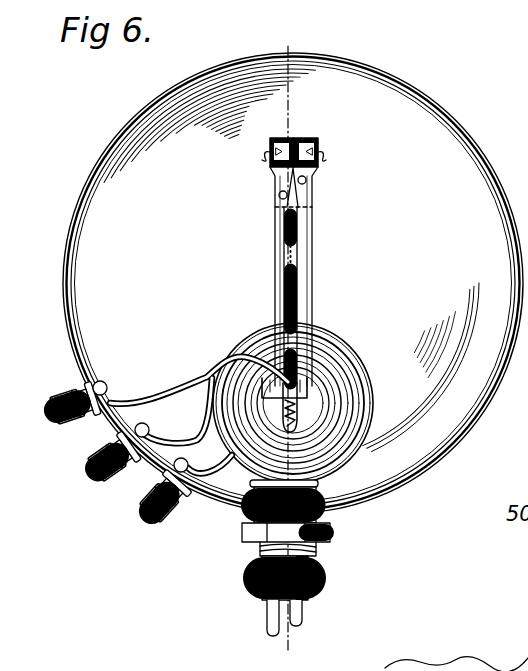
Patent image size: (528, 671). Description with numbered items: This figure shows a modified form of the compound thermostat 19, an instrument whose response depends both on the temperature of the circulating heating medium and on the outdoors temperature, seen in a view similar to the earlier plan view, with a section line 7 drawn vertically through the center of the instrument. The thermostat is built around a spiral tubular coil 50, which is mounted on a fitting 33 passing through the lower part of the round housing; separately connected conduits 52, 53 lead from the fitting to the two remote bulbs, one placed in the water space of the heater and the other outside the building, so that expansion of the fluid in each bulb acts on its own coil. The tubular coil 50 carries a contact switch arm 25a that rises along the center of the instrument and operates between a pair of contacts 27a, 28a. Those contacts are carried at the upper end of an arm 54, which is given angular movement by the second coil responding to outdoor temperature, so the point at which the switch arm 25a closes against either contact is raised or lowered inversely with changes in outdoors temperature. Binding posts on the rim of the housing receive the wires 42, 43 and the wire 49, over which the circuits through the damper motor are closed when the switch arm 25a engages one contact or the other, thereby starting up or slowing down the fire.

The section line 7 is at (310, 42).
The thermostat 19 is at (228, 321).
The contact switch arm 25a is at (290, 269).
The contact 27a is at (262, 160).
The contact 28a is at (326, 160).
The arm 54 is at (310, 256).
The tubular coil 50 is at (346, 346).
The wire 49 is at (86, 426).
The wire 42 is at (130, 473).
The wire 43 is at (183, 508).
The fitting 33 is at (310, 579).
The conduit 52 is at (267, 615).
The conduit 53 is at (303, 617).